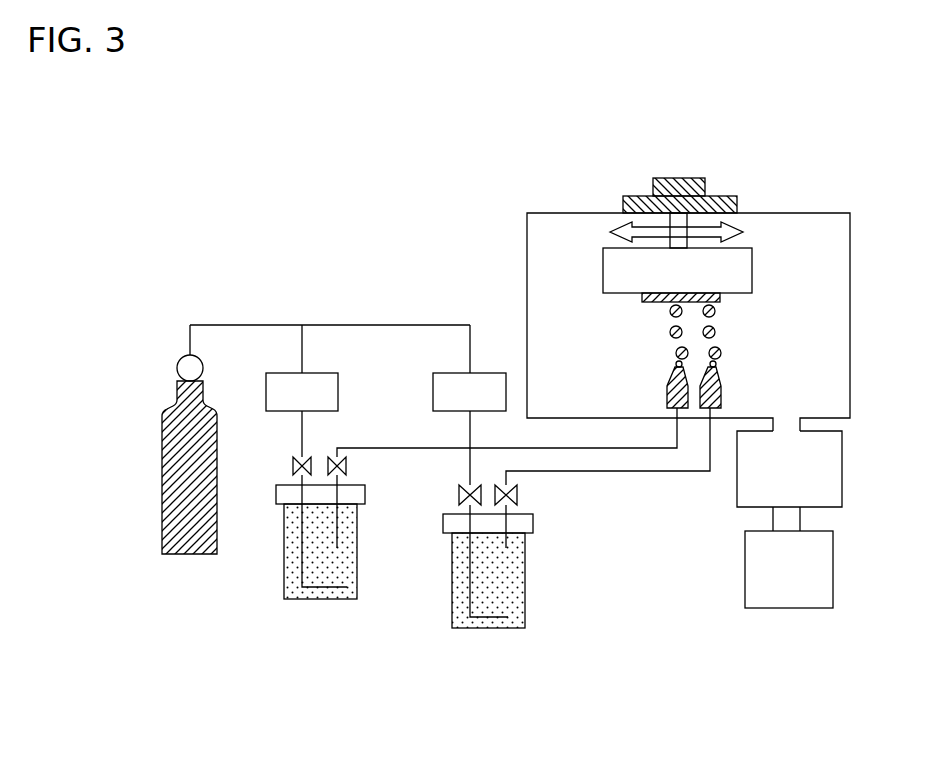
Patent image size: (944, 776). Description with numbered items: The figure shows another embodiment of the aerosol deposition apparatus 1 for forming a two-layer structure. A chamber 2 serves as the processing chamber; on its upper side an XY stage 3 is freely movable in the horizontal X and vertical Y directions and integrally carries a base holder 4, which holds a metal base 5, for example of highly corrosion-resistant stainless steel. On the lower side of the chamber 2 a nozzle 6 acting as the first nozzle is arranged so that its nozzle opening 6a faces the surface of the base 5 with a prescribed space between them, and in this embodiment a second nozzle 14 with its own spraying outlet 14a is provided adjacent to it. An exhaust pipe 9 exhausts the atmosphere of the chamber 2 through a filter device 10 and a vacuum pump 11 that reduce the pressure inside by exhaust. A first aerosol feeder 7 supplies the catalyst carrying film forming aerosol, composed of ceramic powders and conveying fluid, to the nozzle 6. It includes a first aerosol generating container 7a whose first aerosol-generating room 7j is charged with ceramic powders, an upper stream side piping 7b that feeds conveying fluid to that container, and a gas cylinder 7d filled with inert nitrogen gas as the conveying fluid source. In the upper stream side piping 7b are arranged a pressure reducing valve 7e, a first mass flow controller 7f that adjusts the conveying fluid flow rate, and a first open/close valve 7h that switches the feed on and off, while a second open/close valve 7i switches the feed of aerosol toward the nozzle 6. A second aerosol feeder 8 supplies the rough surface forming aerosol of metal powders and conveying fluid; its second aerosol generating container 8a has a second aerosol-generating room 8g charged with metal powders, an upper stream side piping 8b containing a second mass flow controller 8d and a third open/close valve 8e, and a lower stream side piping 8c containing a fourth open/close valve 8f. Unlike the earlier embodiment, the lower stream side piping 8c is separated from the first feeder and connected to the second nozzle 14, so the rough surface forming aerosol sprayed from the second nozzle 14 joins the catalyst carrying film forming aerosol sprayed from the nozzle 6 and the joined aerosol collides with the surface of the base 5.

The aerosol deposition apparatus 1 is at (350, 203).
The chamber 2 is at (810, 213).
The XY stage 3 is at (645, 196).
The base holder 4 is at (615, 258).
The base 5 is at (720, 298).
The nozzle 6 is at (666, 395).
The nozzle opening 6a is at (667, 357).
The second nozzle 14 is at (722, 392).
The second nozzle outlet droplets 14a is at (722, 358).
The first aerosol feeder 7 is at (316, 565).
The first aerosol generating container 7a is at (357, 587).
The upper stream side piping 7b is at (247, 325).
The gas cylinder 7d is at (226, 440).
The pressure reducing valve 7e is at (182, 356).
The first mass flow controller 7f is at (315, 373).
The first open/close valve 7h is at (308, 457).
The second open/close valve 7i is at (346, 466).
The first aerosol-generating room 7j is at (343, 558).
The second aerosol feeder 8 is at (535, 600).
The second aerosol generating container 8a is at (525, 612).
The upper stream side piping 8b is at (378, 325).
The lower stream side piping 8c is at (641, 471).
The second mass flow controller 8d is at (492, 373).
The third open/close valve 8e is at (459, 495).
The fourth open/close valve 8f is at (518, 495).
The second aerosol-generating room 8g is at (505, 590).
The exhaust pipe 9 is at (773, 518).
The filter device 10 is at (842, 472).
The vacuum pump 11 is at (775, 608).